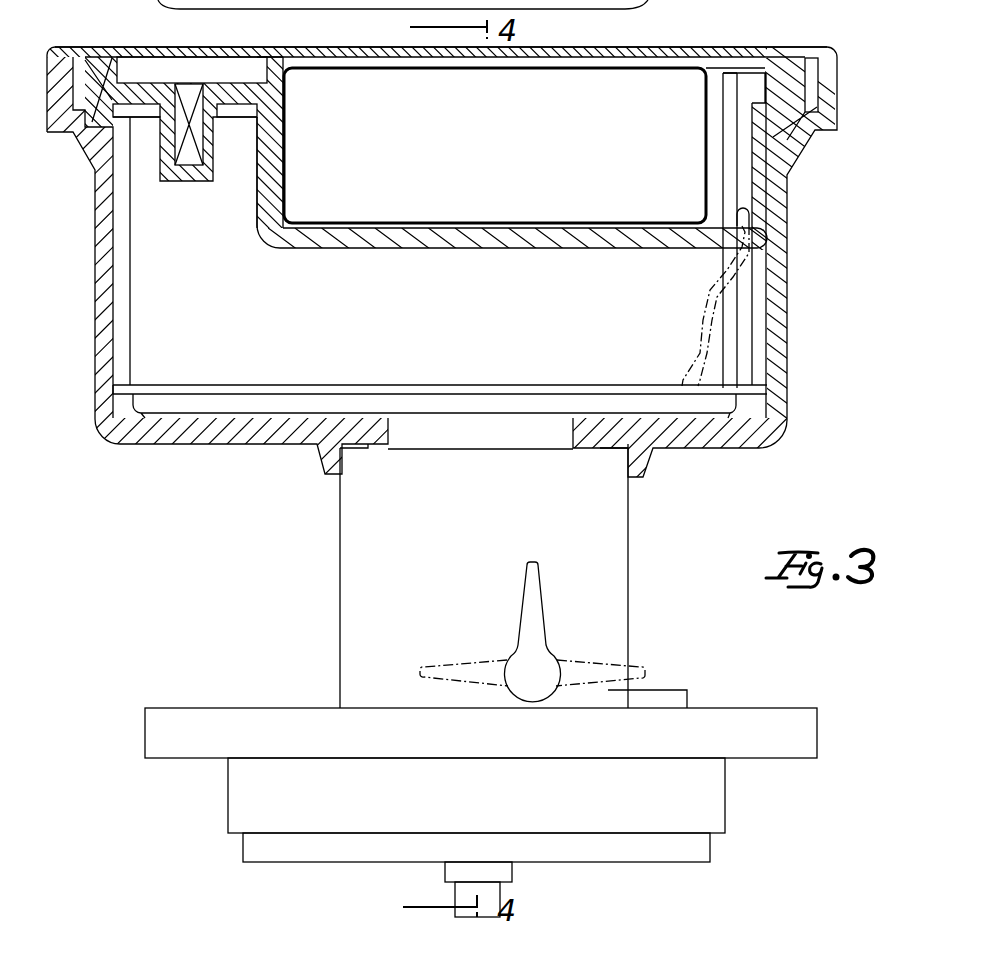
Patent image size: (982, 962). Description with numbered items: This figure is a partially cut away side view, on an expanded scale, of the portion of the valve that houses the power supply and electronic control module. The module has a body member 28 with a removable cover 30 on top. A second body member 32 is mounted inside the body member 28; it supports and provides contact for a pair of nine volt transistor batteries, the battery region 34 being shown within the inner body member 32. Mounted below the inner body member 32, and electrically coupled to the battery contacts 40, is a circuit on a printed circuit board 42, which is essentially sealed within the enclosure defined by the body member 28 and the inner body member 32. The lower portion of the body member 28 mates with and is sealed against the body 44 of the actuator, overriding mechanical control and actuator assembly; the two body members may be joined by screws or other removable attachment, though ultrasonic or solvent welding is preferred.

The body member 28 is at (780, 400).
The removable cover 30 is at (758, 50).
The second body member 32 is at (323, 238).
The cartridge 34 is at (556, 142).
The battery contacts 40 is at (712, 122).
The printed circuit board 42 is at (205, 385).
The body of the actuator 44 is at (388, 434).